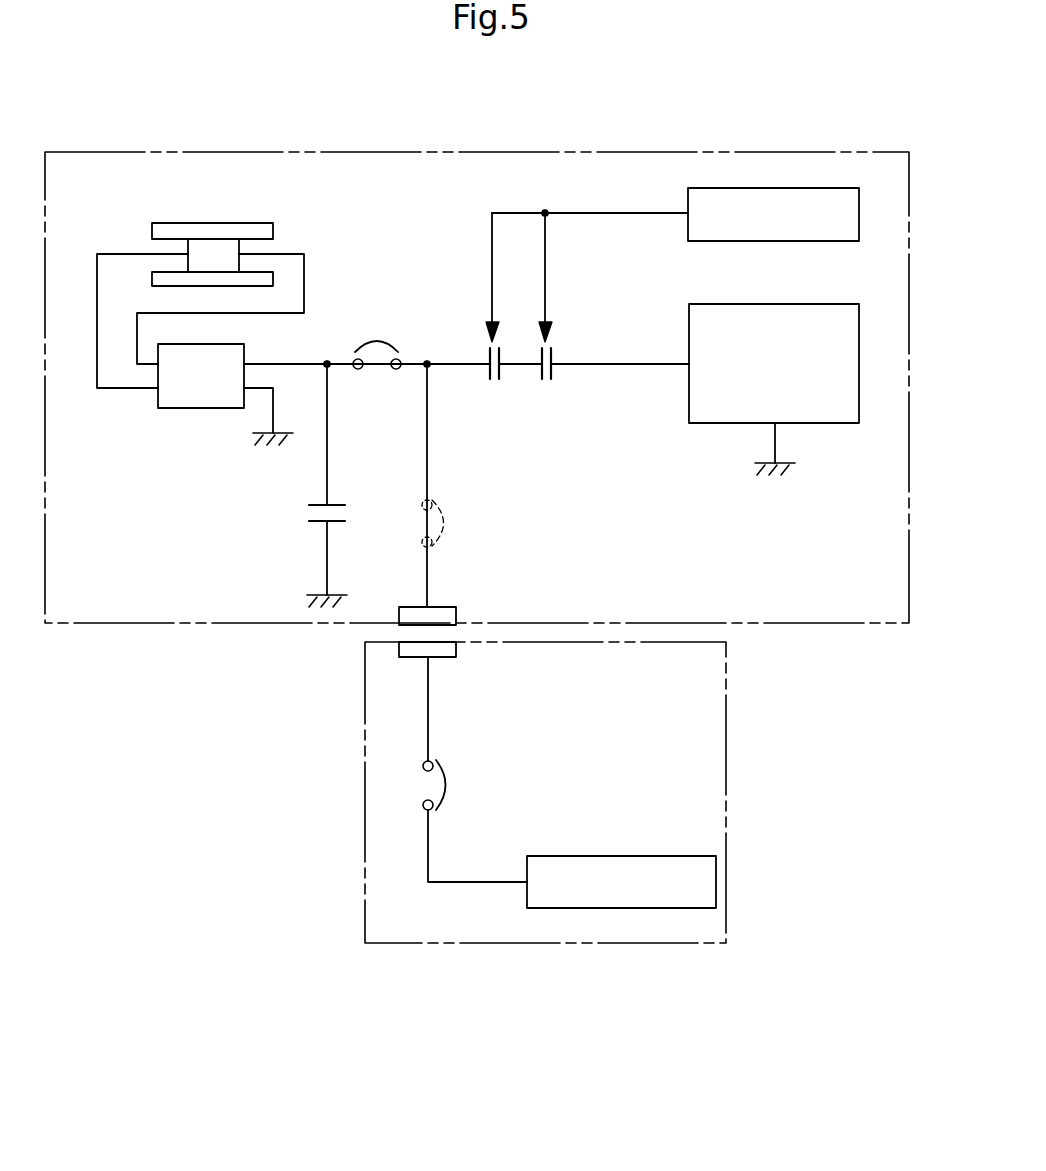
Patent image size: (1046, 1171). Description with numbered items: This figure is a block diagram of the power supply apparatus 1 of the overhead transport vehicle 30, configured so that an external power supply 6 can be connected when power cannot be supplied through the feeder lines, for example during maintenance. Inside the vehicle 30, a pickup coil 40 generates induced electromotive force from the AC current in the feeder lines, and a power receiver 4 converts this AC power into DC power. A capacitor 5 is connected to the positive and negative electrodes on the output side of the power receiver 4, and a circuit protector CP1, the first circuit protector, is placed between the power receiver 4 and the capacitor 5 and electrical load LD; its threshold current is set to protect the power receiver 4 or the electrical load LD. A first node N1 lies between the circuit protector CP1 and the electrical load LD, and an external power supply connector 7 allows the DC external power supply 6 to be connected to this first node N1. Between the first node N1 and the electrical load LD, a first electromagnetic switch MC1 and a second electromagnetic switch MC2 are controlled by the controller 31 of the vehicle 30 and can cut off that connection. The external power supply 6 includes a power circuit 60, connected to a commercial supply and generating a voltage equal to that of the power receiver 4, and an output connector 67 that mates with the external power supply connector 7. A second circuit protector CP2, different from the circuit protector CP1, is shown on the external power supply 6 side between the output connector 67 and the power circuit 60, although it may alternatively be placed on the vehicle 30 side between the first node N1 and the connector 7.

The power supply apparatus 1 is at (348, 204).
The overhead transport vehicle 30 is at (705, 152).
The controller 31 is at (859, 213).
The pickup coil 40 is at (212, 248).
The power receiver 4 is at (197, 409).
The circuit protector CP1 is at (377, 320).
The first node N1 is at (427, 358).
The first electromagnetic switch MC1 is at (499, 391).
The second electromagnetic switch MC2 is at (550, 391).
The electrical load LD is at (774, 389).
The capacitor 5 is at (277, 520).
The second circuit protector CP2 is at (453, 520).
The external power supply connector 7 is at (443, 615).
The output connector 67 is at (443, 650).
The power circuit 60 is at (618, 856).
The external power supply 6 is at (467, 943).